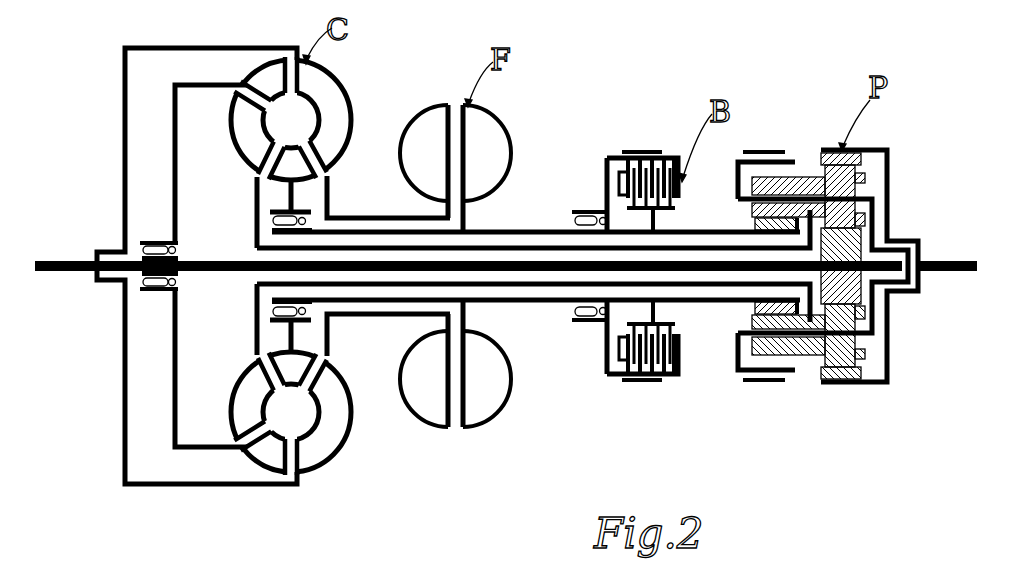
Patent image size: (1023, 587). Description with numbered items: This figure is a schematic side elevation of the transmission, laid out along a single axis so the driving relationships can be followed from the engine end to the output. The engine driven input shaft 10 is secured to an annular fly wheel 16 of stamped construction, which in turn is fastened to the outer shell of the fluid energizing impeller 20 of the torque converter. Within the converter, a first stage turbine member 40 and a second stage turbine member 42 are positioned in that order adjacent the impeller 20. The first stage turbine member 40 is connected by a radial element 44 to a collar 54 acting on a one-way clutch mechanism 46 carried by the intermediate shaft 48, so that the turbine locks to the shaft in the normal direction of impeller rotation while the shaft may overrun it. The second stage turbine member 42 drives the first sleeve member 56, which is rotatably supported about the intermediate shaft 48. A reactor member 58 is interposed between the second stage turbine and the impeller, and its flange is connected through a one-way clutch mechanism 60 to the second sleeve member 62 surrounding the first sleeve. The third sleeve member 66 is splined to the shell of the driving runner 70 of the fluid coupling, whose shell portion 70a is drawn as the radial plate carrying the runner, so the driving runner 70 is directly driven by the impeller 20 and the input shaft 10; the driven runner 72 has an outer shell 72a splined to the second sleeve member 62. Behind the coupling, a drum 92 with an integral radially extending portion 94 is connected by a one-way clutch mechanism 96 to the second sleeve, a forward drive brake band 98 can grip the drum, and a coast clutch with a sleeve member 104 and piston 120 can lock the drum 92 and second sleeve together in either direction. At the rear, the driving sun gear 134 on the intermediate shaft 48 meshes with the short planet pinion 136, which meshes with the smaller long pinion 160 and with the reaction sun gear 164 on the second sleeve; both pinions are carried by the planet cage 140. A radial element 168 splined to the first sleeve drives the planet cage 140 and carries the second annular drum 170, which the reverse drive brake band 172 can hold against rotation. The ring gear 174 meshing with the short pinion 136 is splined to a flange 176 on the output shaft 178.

The input shaft 10 is at (75, 261).
The fly wheel 16 is at (125, 78).
The impeller 20 is at (329, 84).
The first stage turbine member 40 is at (267, 78).
The second stage turbine member 42 is at (246, 143).
The radial element 44 is at (175, 153).
The one-way clutch mechanism 46 is at (174, 251).
The intermediate shaft 48 is at (240, 273).
The collar 54 is at (257, 197).
The first sleeve member 56 is at (270, 249).
The reactor member 58 is at (280, 172).
The one-way clutch mechanism 60 is at (305, 222).
The second sleeve member 62 is at (365, 218).
The third sleeve member 66 is at (393, 229).
The driving runner 70 is at (418, 156).
The flange 70a is at (446, 207).
The driven runner 72 is at (498, 155).
The outer shell 72a is at (468, 210).
The drum 92 is at (608, 158).
The radially extending portion 94 is at (605, 190).
The one-way clutch mechanism 96 is at (578, 222).
The forward drive brake band 98 is at (627, 149).
The sleeve member 104 is at (658, 220).
The piston 120 is at (618, 180).
The driving sun gear 134 is at (878, 288).
The short planet pinion 136 is at (848, 177).
The planet cage 140 is at (866, 208).
The long pinion 160 is at (862, 185).
The reaction sun gear 164 is at (755, 225).
The radial element 168 is at (738, 188).
The second annular drum 170 is at (741, 161).
The reverse drive brake band 172 is at (783, 150).
The ring gear 174 is at (858, 157).
The flange 176 is at (890, 228).
The output shaft 178 is at (930, 262).